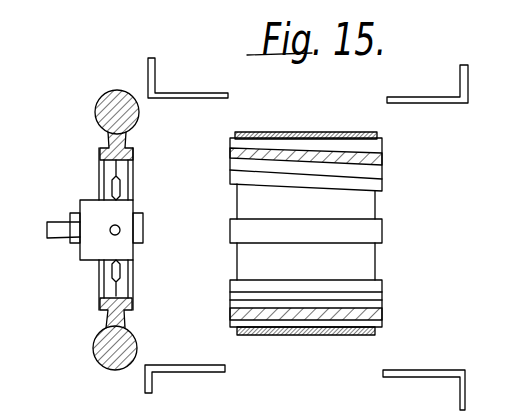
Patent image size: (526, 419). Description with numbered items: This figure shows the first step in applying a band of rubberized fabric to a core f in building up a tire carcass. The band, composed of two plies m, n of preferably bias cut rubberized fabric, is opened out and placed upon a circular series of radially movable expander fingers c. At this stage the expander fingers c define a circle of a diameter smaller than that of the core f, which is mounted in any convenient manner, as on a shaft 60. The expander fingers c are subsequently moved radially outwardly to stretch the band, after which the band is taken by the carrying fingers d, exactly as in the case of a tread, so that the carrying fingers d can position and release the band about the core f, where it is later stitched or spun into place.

The core f is at (105, 112).
The carrying fingers d is at (173, 97).
The expander fingers c is at (382, 157).
The shaft 60 is at (60, 228).
The ply m is at (338, 334).
The ply n is at (378, 333).